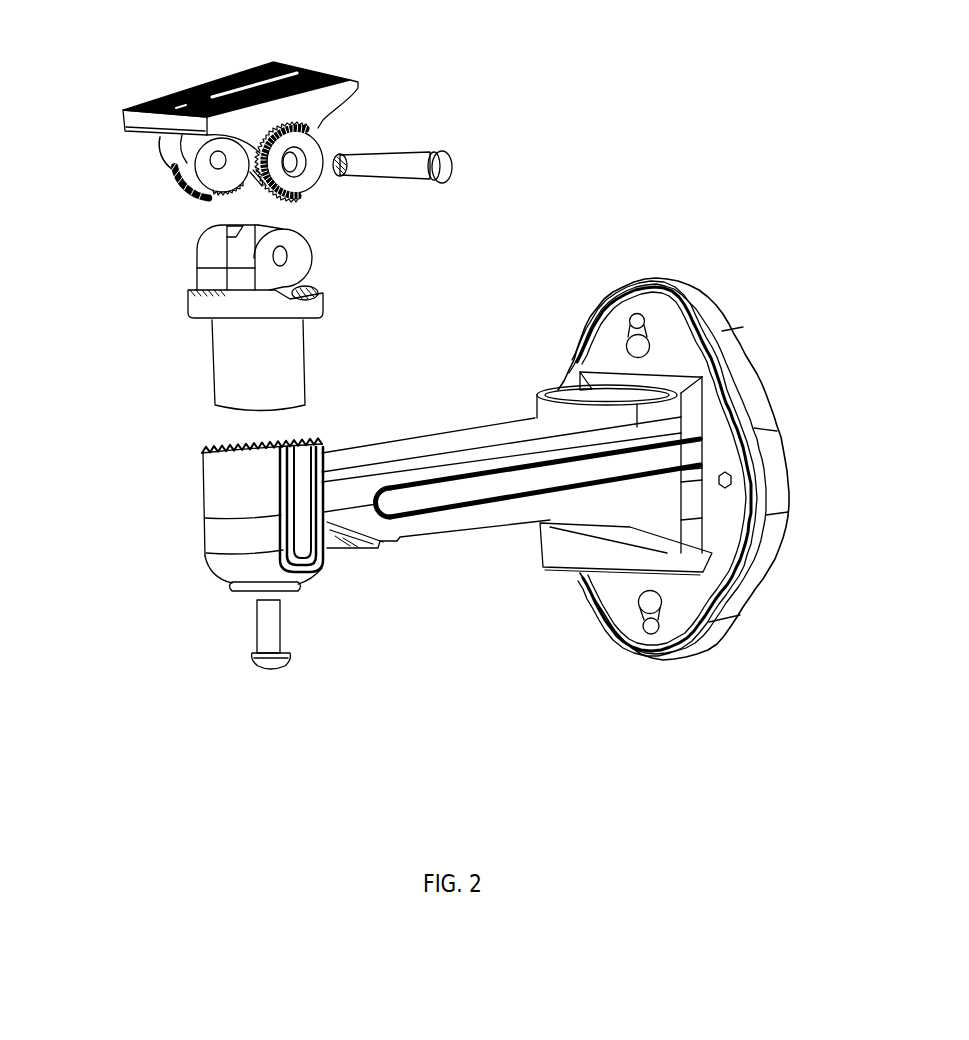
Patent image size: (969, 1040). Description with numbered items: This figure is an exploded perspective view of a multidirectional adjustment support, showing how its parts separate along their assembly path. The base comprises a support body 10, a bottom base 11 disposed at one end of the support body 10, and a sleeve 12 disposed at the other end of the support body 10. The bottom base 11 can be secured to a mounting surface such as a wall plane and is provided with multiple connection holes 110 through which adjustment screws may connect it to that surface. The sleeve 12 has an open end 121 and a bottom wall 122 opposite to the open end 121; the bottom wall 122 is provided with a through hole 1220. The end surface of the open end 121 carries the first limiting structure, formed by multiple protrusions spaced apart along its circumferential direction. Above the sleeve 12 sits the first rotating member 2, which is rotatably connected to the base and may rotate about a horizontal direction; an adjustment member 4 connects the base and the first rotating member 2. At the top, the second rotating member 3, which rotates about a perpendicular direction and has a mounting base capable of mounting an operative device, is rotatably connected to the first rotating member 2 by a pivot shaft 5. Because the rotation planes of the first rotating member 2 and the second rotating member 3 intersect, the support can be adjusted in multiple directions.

The first rotating member 2 is at (232, 350).
The second rotating member 3 is at (332, 83).
The adjustment member 4 is at (263, 633).
The pivot shaft 5 is at (392, 165).
The support body 10 is at (483, 517).
The bottom base 11 is at (714, 469).
The sleeve 12 is at (242, 552).
The connection holes 110 is at (637, 340).
The open end 121 is at (230, 458).
The bottom wall 122 is at (272, 571).
The through hole 1220 is at (245, 591).